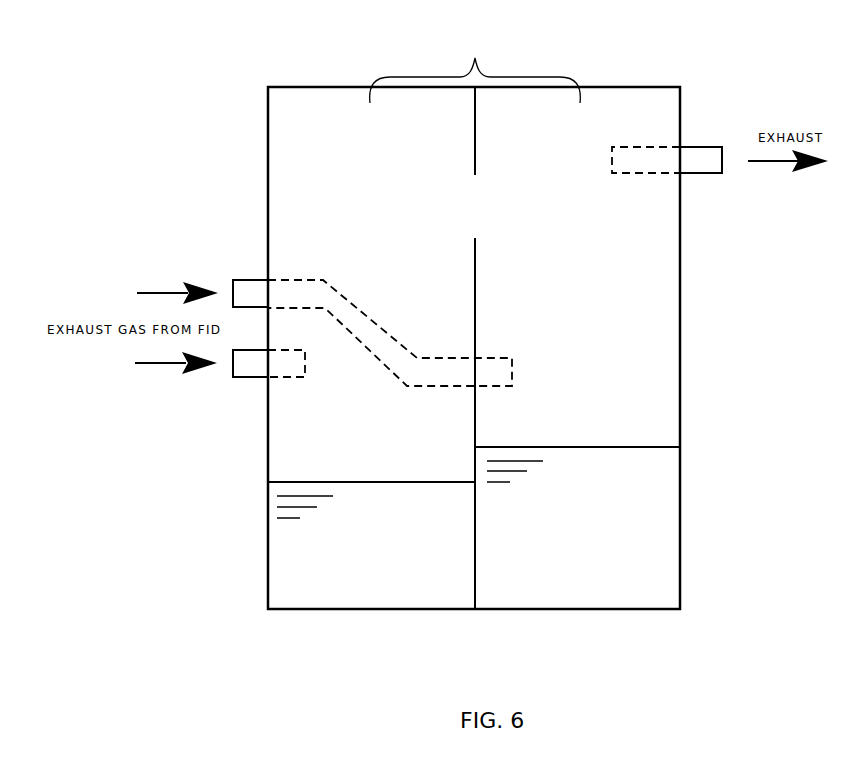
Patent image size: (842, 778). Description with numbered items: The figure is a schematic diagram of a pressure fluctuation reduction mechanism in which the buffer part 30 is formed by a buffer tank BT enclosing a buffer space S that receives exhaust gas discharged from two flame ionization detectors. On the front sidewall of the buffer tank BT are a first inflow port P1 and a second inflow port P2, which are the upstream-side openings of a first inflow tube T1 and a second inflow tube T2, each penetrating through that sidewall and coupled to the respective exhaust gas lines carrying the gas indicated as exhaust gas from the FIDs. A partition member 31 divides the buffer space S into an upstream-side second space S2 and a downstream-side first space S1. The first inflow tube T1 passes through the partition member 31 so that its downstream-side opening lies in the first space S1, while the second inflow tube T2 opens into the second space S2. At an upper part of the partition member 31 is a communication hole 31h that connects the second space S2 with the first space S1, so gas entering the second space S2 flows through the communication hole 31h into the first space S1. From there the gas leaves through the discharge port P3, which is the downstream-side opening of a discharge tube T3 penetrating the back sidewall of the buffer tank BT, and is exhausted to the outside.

The buffer part 30 is at (222, 68).
The buffer tank BT is at (681, 312).
The partition member 31 is at (476, 290).
The communication hole 31h is at (491, 209).
The buffer space S is at (481, 53).
The first space S1 is at (572, 121).
The second space S2 is at (401, 121).
The first inflow port P1 is at (232, 290).
The second inflow port P2 is at (232, 367).
The discharge port P3 is at (722, 163).
The first inflow tube T1 is at (291, 279).
The second inflow tube T2 is at (290, 380).
The discharge tube T3 is at (655, 175).